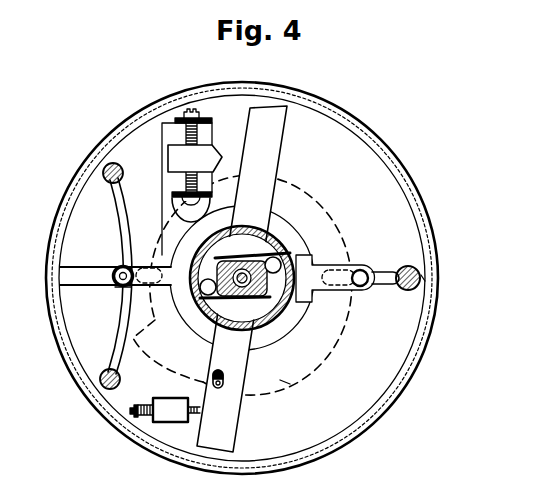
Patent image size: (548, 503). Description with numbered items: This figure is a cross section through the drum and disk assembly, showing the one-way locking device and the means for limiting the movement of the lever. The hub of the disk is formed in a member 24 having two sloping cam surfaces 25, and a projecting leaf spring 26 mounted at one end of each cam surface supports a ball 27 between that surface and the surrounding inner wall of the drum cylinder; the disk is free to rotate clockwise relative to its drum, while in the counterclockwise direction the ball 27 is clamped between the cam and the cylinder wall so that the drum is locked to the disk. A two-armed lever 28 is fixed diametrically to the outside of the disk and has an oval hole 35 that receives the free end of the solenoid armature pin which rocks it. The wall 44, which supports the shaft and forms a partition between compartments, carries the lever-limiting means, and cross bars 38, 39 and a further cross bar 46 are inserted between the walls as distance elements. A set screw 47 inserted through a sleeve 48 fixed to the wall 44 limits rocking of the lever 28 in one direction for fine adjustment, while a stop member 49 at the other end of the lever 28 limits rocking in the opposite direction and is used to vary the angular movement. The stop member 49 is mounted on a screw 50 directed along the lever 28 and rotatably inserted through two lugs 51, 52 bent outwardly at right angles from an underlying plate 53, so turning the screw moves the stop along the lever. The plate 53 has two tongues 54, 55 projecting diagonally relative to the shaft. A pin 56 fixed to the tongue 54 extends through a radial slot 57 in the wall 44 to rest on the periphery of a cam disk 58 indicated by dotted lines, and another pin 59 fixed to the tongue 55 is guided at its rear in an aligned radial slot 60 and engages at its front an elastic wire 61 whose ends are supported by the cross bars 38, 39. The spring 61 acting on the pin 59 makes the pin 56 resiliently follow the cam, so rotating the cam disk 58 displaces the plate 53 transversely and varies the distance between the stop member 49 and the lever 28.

The member 24 is at (260, 306).
The sloping cam surfaces 25 is at (210, 258).
The projecting leaf spring 26 is at (267, 232).
The ball 27 is at (330, 228).
The lever 28 is at (287, 112).
The oval hole 35 is at (224, 385).
The cross bar 38 is at (103, 167).
The cross bar 39 is at (99, 381).
The wall 44 is at (405, 344).
The cross bar 46 is at (423, 279).
The set screw 47 is at (142, 416).
The sleeve 48 is at (173, 412).
The stop member 49 is at (212, 155).
The screw 50 is at (186, 112).
The lug 51 is at (175, 118).
The lug 52 is at (178, 193).
The plate 53 is at (162, 126).
The tongue 54 is at (364, 266).
The tongue 55 is at (118, 287).
The pin 56 is at (366, 286).
The radial slot 57 is at (414, 270).
The cam disk 58 is at (288, 386).
The pin 59 is at (118, 264).
The radial slot 60 is at (100, 275).
The elastic wire 61 is at (117, 340).